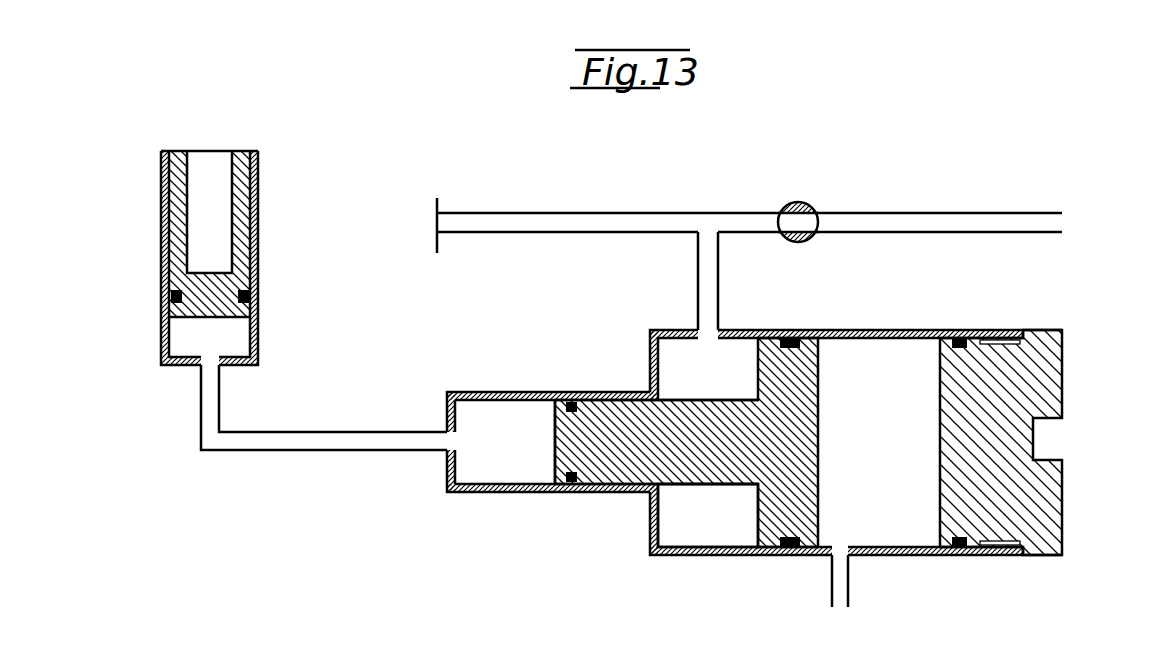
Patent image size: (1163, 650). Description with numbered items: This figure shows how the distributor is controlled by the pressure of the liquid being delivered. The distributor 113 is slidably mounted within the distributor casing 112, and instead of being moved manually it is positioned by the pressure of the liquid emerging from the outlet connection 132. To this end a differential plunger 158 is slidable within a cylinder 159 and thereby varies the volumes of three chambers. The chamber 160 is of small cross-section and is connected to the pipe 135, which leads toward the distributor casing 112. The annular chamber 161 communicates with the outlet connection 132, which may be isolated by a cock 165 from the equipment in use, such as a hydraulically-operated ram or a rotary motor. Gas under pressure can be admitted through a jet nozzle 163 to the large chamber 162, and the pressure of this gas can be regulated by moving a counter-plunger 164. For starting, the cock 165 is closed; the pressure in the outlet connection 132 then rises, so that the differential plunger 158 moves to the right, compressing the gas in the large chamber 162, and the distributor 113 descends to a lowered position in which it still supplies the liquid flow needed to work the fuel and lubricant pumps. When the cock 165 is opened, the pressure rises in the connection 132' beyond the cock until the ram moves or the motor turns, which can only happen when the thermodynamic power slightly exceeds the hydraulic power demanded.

The distributor casing 112 is at (163, 335).
The distributor 113 is at (178, 230).
The pipe 135 is at (310, 445).
The outlet connection 132 is at (617, 255).
The connection beyond the cock 132' is at (930, 206).
The cock 165 is at (788, 205).
The differential plunger 158 is at (707, 433).
The cylinder 159 is at (598, 490).
The chamber 160 is at (552, 442).
The annular chamber 161 is at (708, 515).
The large chamber 162 is at (856, 442).
The jet nozzle 163 is at (838, 583).
The counter-plunger 164 is at (1022, 390).